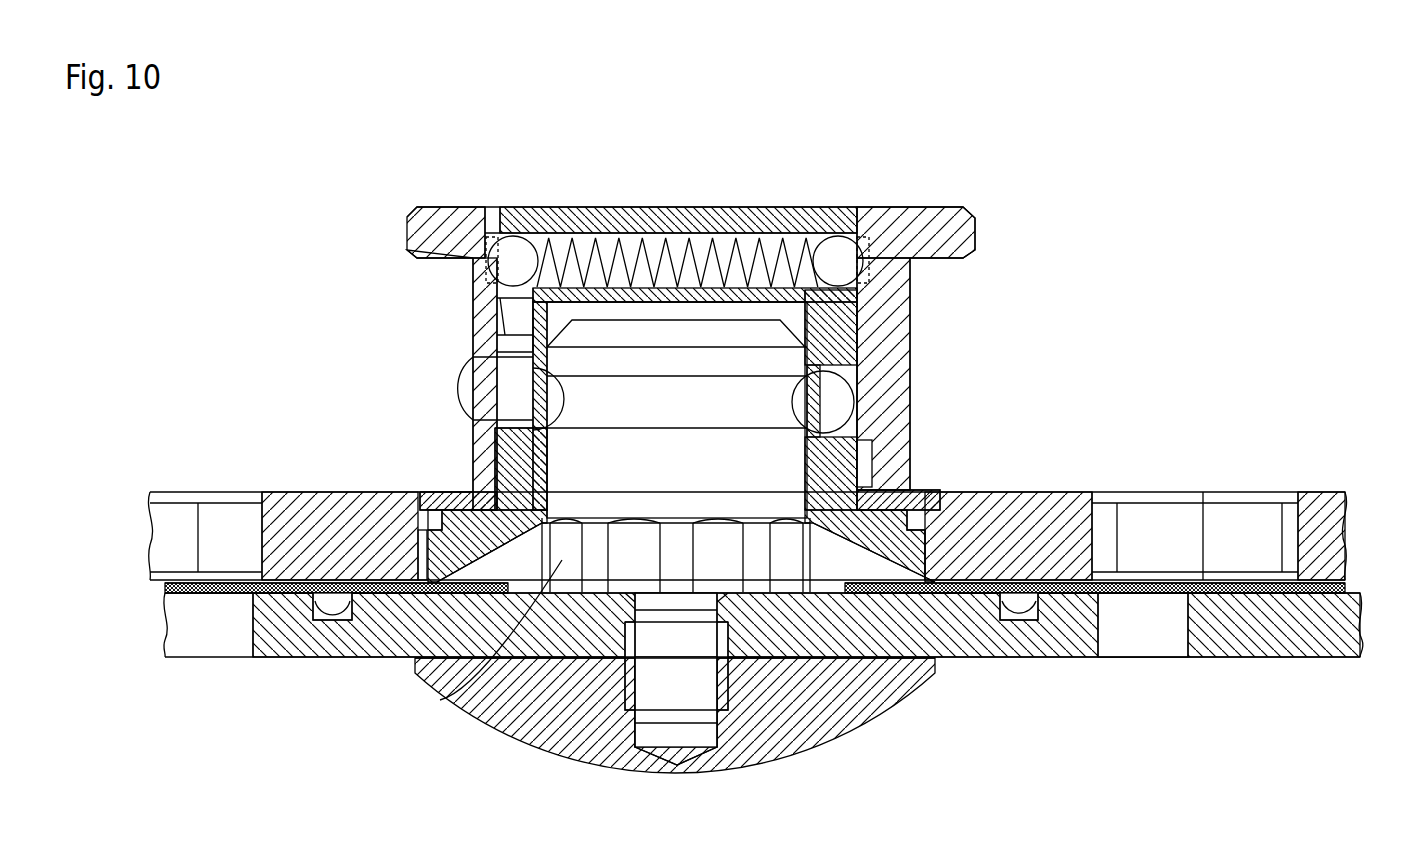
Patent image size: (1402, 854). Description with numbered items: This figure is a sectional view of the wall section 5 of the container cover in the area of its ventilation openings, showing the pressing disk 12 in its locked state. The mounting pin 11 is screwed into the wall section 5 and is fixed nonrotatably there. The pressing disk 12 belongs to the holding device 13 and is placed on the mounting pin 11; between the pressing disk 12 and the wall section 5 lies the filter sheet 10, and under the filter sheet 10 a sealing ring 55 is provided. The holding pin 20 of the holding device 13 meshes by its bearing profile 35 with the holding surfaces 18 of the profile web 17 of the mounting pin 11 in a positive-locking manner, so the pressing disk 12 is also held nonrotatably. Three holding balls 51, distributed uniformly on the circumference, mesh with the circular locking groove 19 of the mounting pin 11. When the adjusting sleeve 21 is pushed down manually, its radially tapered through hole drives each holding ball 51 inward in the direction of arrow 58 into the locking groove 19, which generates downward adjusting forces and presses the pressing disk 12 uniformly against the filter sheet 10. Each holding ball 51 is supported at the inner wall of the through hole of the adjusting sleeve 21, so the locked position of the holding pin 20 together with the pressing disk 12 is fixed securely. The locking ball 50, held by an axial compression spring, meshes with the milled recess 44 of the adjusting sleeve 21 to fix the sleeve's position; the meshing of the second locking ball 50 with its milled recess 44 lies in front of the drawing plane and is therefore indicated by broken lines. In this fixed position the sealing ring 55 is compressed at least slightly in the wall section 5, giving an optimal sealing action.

The wall section 5 is at (672, 662).
The filter sheet 10 is at (763, 679).
The mounting pin 11 is at (695, 330).
The pressing disk 12 is at (747, 499).
The holding device 13 is at (432, 384).
The profile web 17 is at (675, 684).
The holding surfaces 18 is at (699, 659).
The locking groove 19 is at (481, 433).
The holding pin 20 is at (697, 420).
The adjusting sleeve 21 is at (691, 186).
The bearing profile 35 is at (668, 643).
The milled recess 44 is at (648, 200).
The locking ball 50 is at (724, 222).
The holding ball 51 is at (875, 392).
The sealing ring 55 is at (755, 646).
The arrow 58 is at (1010, 378).